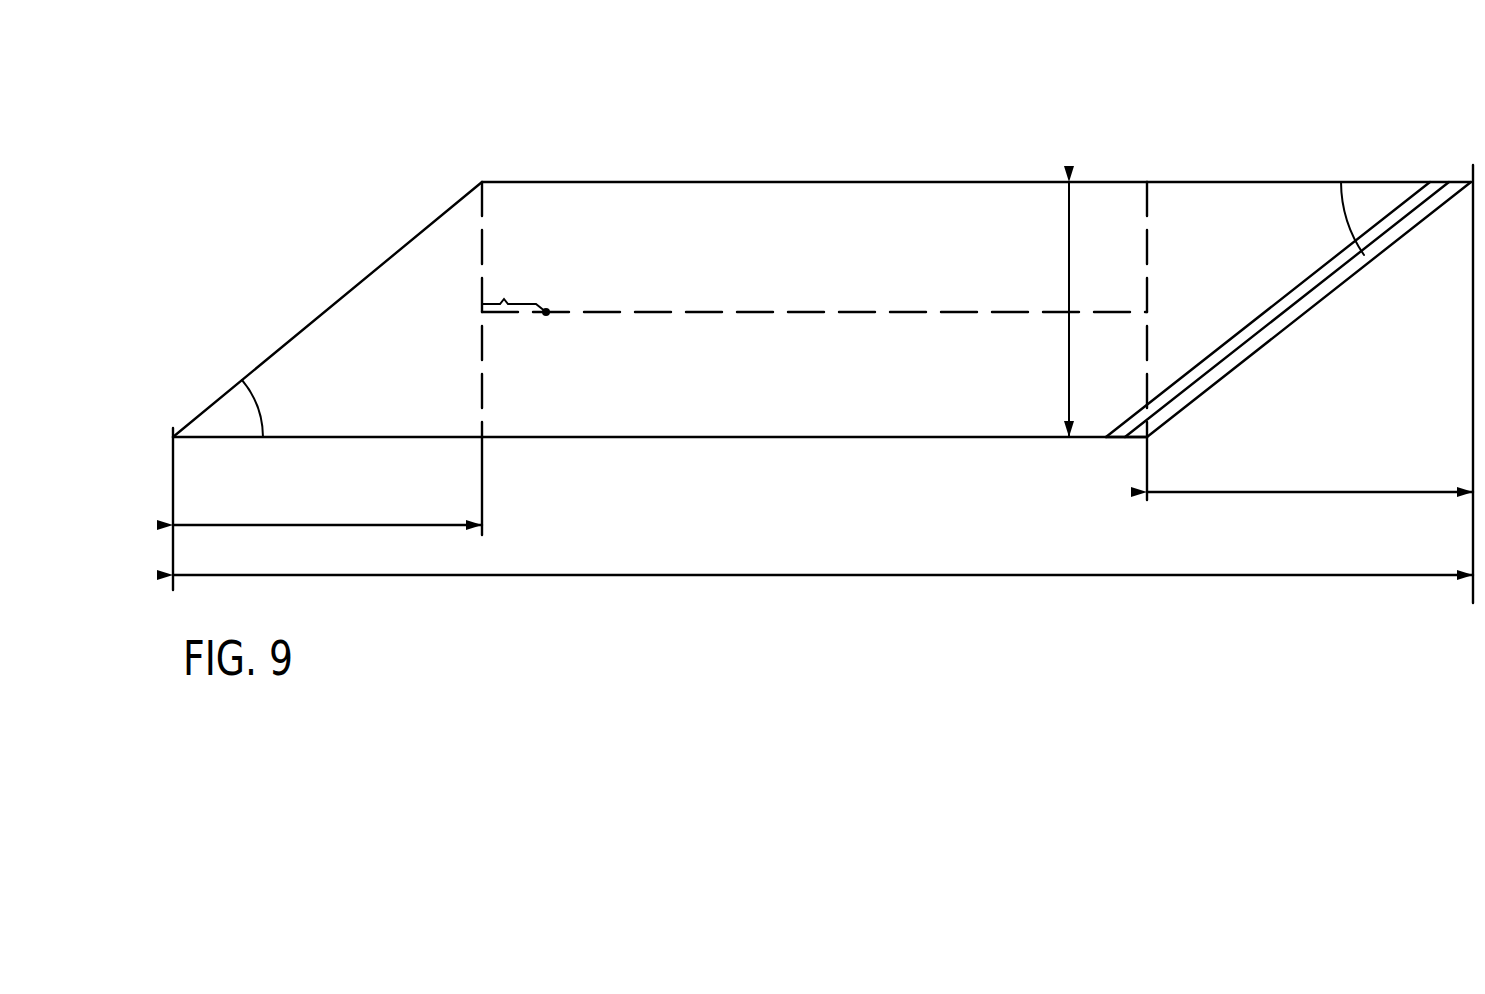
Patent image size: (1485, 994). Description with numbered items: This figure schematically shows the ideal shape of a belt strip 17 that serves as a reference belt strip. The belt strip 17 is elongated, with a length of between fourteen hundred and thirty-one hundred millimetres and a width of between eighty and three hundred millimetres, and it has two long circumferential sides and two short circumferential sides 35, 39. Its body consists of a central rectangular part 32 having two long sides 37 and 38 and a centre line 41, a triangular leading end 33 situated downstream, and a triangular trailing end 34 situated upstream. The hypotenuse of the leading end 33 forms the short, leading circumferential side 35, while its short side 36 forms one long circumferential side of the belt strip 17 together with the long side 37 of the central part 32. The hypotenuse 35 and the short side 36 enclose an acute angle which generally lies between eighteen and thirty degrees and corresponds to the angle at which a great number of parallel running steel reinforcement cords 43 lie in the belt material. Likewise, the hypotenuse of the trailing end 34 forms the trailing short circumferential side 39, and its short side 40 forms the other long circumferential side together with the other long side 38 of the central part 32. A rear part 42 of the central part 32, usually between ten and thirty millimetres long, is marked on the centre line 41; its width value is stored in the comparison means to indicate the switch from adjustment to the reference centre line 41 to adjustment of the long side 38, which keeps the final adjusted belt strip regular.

The belt strip 17 is at (1106, 163).
The central rectangular part 32 is at (775, 228).
The leading end 33 is at (1278, 238).
The trailing end 34 is at (377, 293).
The short leading circumferential side 35 is at (1298, 317).
The short side of the leading end 36 is at (1440, 107).
The long side of the central part 37 is at (902, 106).
The other long side of the central part 38 is at (900, 447).
The trailing short circumferential side 39 is at (317, 317).
The short side of the trailing end 40 is at (343, 447).
The centre line 41 is at (905, 232).
The rear part of the central part 42 is at (592, 236).
The steel reinforcement cords 43 is at (1140, 440).